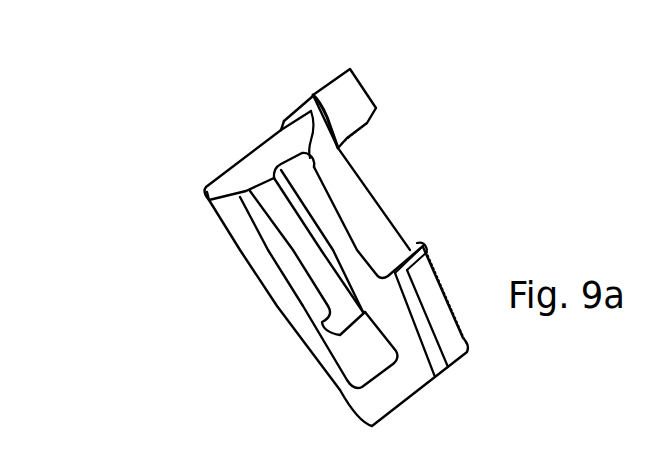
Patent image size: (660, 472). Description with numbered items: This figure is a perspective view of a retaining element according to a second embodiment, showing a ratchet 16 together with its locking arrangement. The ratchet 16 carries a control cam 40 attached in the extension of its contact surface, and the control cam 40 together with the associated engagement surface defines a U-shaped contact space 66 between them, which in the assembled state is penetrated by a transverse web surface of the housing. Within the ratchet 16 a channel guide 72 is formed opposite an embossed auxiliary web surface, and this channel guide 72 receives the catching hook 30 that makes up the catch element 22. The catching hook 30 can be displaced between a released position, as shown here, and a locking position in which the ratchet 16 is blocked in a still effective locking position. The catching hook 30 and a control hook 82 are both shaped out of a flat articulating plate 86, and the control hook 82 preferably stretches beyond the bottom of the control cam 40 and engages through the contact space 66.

The catch element 22 is at (246, 194).
The articulating plate 86 is at (237, 168).
The control hook 82 is at (303, 105).
The control cam 40 is at (347, 109).
The catching hook 30 is at (309, 259).
The ratchet 16 is at (353, 190).
The U-shaped contact space 66 is at (383, 237).
The channel guide 72 is at (363, 355).